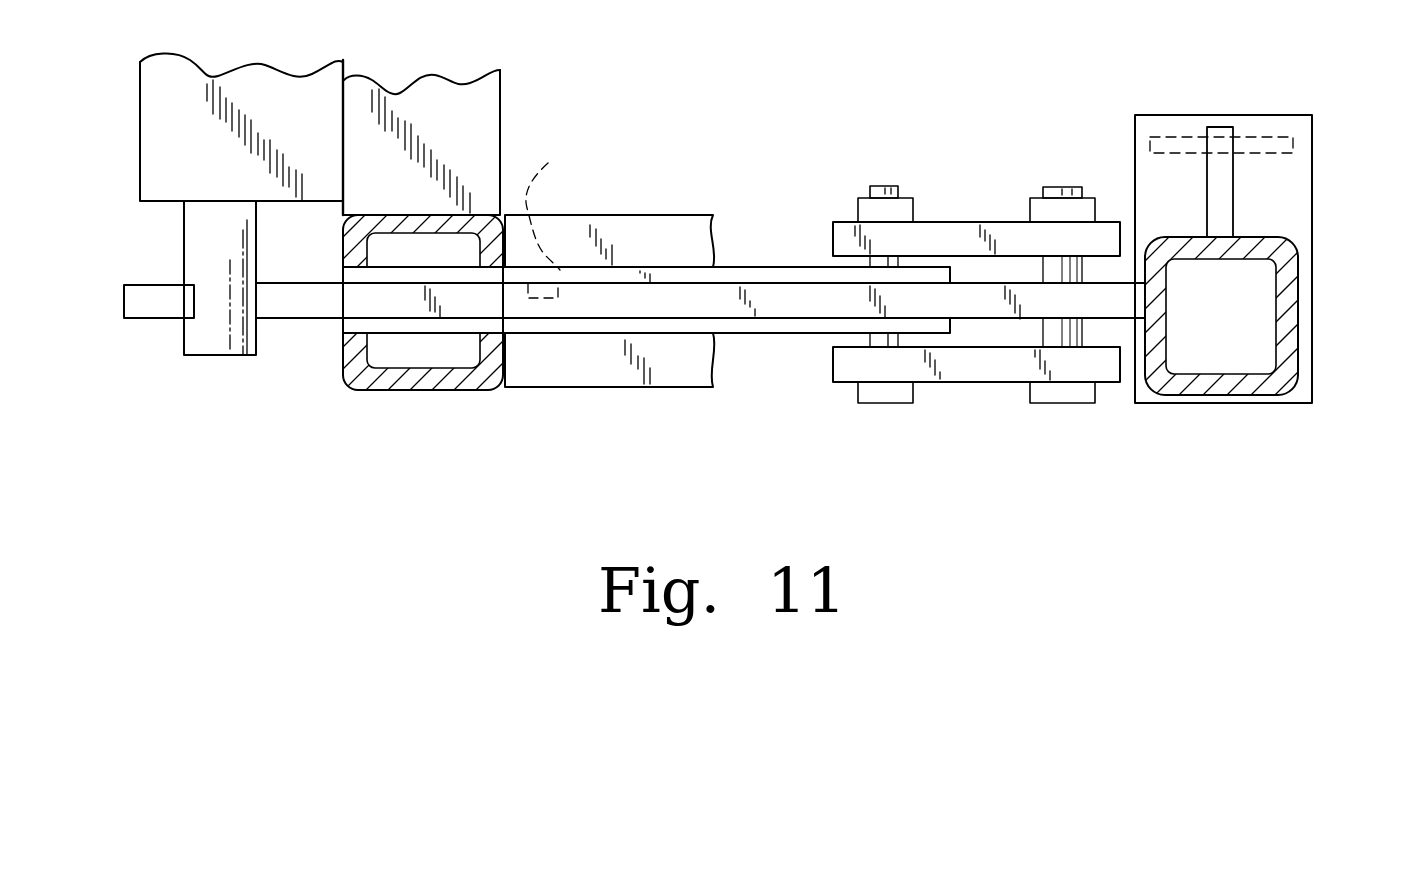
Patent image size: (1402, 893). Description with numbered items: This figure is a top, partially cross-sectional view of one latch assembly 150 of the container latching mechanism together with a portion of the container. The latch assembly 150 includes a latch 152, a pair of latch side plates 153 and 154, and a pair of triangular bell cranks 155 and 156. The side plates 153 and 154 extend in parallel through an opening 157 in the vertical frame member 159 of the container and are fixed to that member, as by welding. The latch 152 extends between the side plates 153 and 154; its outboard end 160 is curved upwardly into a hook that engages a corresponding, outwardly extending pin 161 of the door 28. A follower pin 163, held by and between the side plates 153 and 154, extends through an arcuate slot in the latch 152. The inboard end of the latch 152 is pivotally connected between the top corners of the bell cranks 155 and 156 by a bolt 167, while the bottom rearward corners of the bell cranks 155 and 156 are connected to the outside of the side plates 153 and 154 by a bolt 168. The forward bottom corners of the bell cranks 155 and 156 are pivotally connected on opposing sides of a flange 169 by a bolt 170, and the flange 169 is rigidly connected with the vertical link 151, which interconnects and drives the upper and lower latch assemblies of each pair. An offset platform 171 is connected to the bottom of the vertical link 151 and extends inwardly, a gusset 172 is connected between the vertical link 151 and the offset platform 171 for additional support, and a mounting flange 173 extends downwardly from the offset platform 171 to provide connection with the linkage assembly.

The door 28 is at (140, 112).
The latch assembly 150 is at (976, 301).
The vertical link 151 is at (1275, 237).
The latch 152 is at (263, 320).
The latch side plate 153 is at (775, 267).
The latch side plate 154 is at (560, 340).
The bell crank 155 is at (948, 222).
The bell crank 156 is at (970, 384).
The opening 157 is at (343, 326).
The vertical frame member 159 is at (400, 391).
The outboard end 160 is at (150, 312).
The pin 161 is at (220, 356).
The follower pin 163 is at (609, 215).
The bolt 167 is at (1047, 188).
The bolt 168 is at (878, 404).
The flange 169 is at (1115, 320).
The bolt 170 is at (1087, 190).
The offset platform 171 is at (1172, 115).
The gusset 172 is at (1225, 181).
The mounting flange 173 is at (1249, 131).